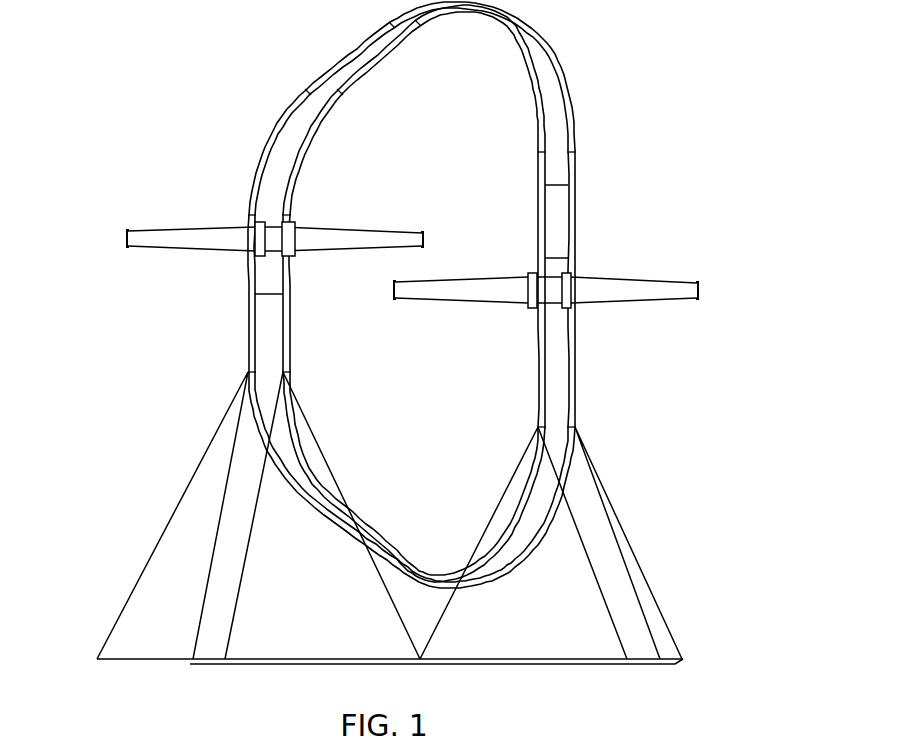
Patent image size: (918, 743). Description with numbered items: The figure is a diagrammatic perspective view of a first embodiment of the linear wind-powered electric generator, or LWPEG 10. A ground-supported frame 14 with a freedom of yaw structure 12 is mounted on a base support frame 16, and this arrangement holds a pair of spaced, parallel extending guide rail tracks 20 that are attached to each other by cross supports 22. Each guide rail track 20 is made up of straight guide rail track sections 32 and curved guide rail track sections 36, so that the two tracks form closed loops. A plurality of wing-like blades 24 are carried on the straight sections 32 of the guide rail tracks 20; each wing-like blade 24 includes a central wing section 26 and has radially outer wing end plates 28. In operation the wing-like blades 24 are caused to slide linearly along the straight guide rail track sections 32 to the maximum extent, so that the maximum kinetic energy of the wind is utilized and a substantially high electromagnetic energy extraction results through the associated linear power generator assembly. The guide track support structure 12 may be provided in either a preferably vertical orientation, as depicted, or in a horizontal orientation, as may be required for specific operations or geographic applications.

The linear wind-powered electric generator 10 is at (590, 124).
The freedom of yaw structure 12 is at (513, 659).
The ground-supported frame 14 is at (613, 617).
The base support frame 16 is at (266, 663).
The guide rail tracks 20 is at (547, 185).
The cross supports 22 is at (555, 257).
The wing-like blades 24 is at (188, 250).
The central wing section 26 is at (272, 221).
The outer wing end plates 28 is at (128, 237).
The straight guide rail track sections 32 is at (345, 57).
The curved guide rail track sections 36 is at (290, 120).